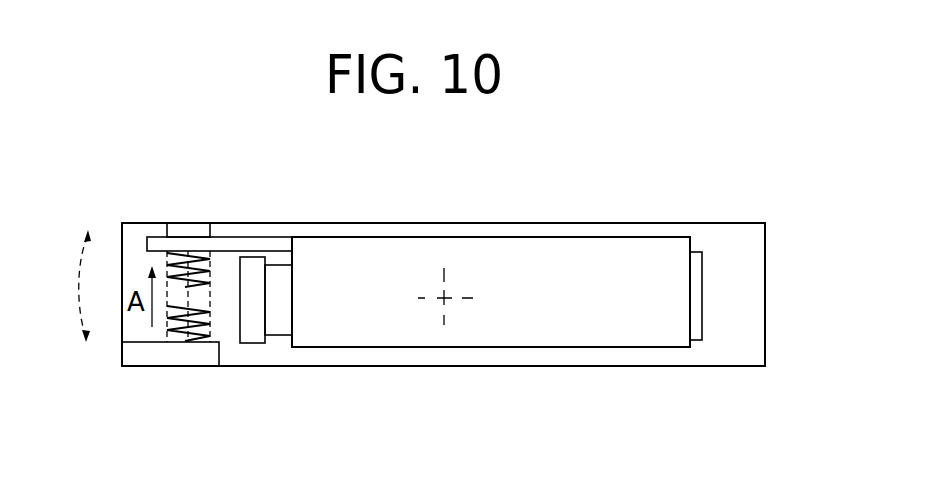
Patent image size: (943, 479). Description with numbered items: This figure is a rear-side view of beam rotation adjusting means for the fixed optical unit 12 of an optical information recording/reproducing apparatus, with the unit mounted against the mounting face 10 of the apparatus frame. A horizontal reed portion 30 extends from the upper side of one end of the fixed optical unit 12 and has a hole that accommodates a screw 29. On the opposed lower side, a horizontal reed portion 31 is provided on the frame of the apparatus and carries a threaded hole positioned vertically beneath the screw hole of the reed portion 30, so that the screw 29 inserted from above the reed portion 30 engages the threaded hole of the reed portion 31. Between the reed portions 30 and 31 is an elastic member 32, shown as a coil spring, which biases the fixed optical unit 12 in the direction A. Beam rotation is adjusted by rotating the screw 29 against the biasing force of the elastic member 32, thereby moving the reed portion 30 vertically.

The face for mounting the fixed optical unit 10 is at (737, 273).
The fixed optical unit 12 is at (541, 253).
The screw 29 is at (187, 227).
The horizontal reed portion 30 is at (155, 236).
The horizontal reed portion 31 is at (188, 353).
The elastic member 32 is at (210, 265).